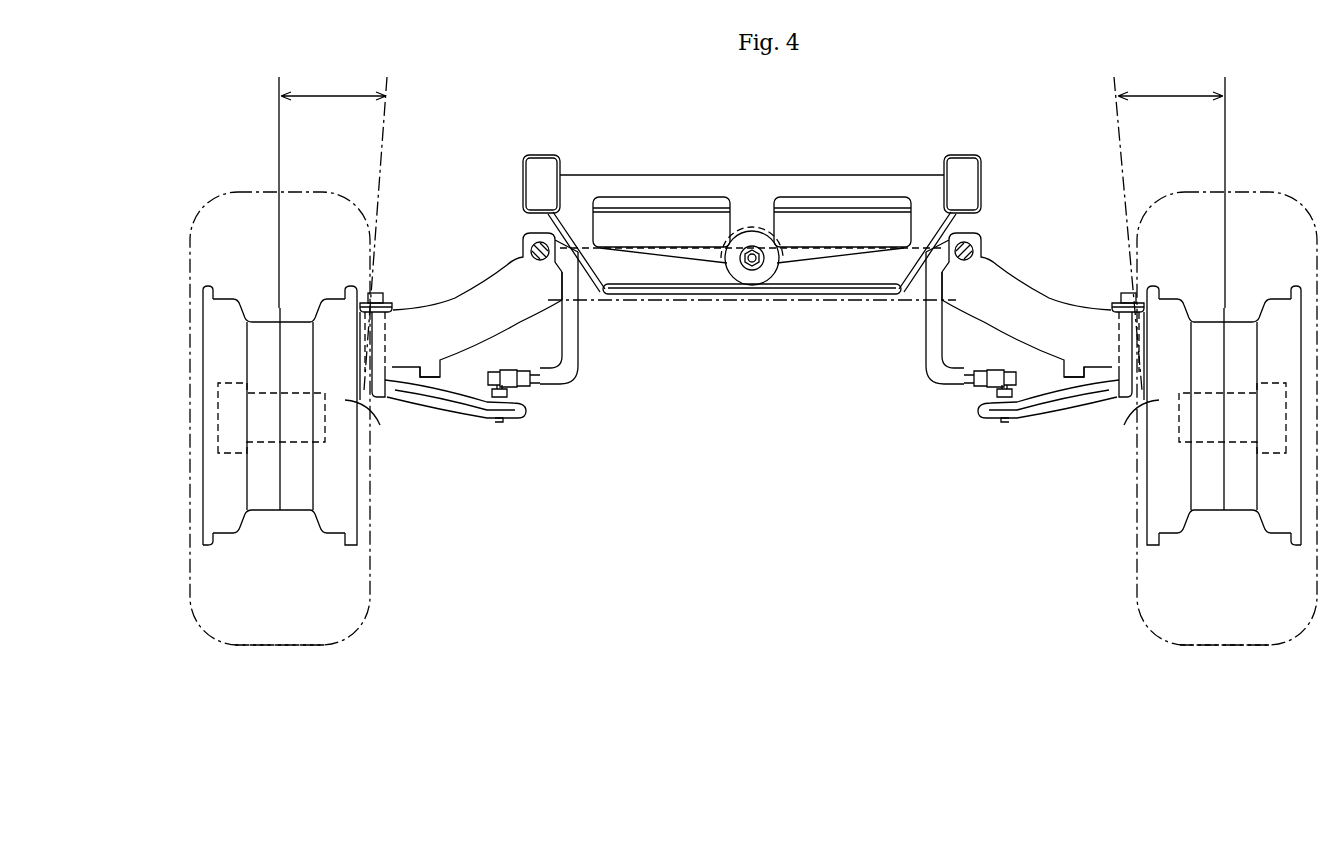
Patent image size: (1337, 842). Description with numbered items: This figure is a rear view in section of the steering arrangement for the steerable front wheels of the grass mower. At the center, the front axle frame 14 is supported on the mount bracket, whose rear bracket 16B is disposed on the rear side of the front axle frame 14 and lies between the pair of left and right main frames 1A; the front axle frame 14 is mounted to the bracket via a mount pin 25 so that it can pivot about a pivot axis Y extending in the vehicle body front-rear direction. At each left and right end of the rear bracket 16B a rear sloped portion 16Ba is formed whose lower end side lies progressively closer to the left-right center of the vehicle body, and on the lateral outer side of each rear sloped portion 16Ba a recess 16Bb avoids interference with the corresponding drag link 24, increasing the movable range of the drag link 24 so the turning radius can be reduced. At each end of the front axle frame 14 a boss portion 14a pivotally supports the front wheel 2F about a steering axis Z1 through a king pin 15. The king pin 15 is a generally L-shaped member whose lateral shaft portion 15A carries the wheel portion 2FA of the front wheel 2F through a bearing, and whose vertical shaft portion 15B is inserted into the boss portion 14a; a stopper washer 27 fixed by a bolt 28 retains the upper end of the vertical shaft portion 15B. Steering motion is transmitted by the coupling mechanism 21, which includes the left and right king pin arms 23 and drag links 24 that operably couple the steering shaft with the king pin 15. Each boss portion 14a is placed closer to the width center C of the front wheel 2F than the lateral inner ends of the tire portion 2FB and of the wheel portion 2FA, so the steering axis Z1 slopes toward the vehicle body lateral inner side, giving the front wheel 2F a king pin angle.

The main frame 1A is at (542, 153).
The front wheel 2F is at (380, 661).
The wheel portion 2FA is at (337, 517).
The tire portion 2FB is at (282, 645).
The front axle frame 14 is at (472, 290).
The boss portion 14a is at (352, 318).
The king pin 15 is at (432, 427).
The lateral shaft portion 15A is at (332, 400).
The vertical shaft portion 15B is at (394, 345).
The rear bracket 16B is at (748, 183).
The rear sloped portion 16Ba is at (598, 296).
The recess 16Bb is at (552, 299).
The coupling mechanism 21 is at (583, 406).
The king pin arm 23 is at (512, 421).
The drag link 24 is at (533, 246).
The mount pin 25 is at (758, 264).
The stopper washer 27 is at (392, 306).
The bolt 28 is at (378, 292).
The width center C is at (751, 180).
The steering axis Z1 is at (753, 221).
The pivot axis Y is at (739, 268).